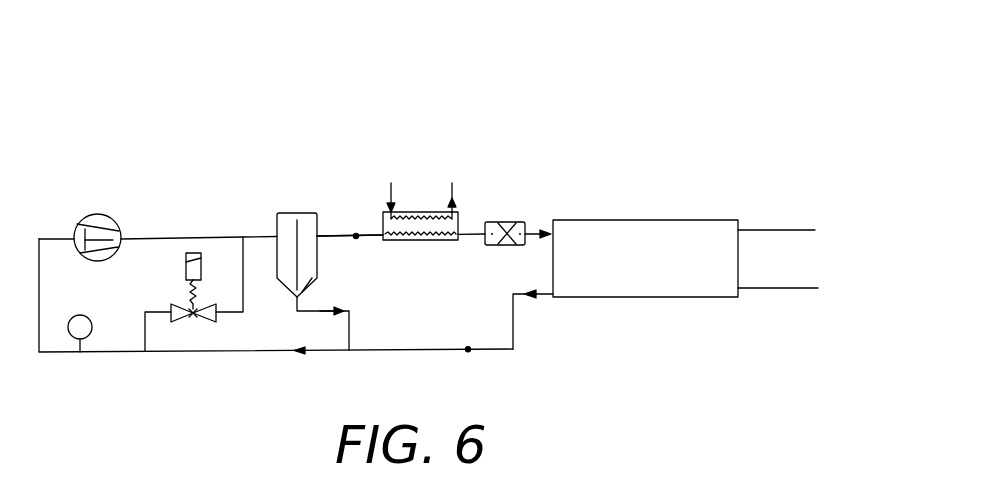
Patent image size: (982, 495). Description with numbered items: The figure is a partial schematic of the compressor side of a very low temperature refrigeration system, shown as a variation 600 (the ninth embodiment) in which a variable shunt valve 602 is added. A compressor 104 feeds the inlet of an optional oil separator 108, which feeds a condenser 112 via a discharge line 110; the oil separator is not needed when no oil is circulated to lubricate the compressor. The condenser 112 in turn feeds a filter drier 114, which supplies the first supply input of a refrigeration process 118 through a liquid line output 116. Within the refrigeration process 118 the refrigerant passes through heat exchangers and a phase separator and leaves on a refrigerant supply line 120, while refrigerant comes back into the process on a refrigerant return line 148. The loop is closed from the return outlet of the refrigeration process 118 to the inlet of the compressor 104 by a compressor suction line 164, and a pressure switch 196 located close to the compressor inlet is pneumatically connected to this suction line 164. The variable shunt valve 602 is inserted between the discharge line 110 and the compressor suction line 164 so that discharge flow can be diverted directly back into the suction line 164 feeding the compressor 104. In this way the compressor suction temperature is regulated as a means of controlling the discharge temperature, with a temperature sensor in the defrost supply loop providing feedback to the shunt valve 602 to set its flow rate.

The variation of refrigeration system 600 is at (178, 98).
The compressor 104 is at (100, 217).
The pressure switch 196 is at (85, 316).
The variable shunt valve 602 is at (216, 320).
The oil separator 108 is at (292, 217).
The discharge line 110 is at (342, 233).
The condenser 112 is at (427, 241).
The filter drier 114 is at (488, 222).
The liquid line output 116 is at (548, 230).
The refrigeration process 118 is at (667, 274).
The compressor suction line 164 is at (517, 310).
The refrigerant supply line 120 is at (792, 230).
The refrigerant return line 148 is at (795, 288).